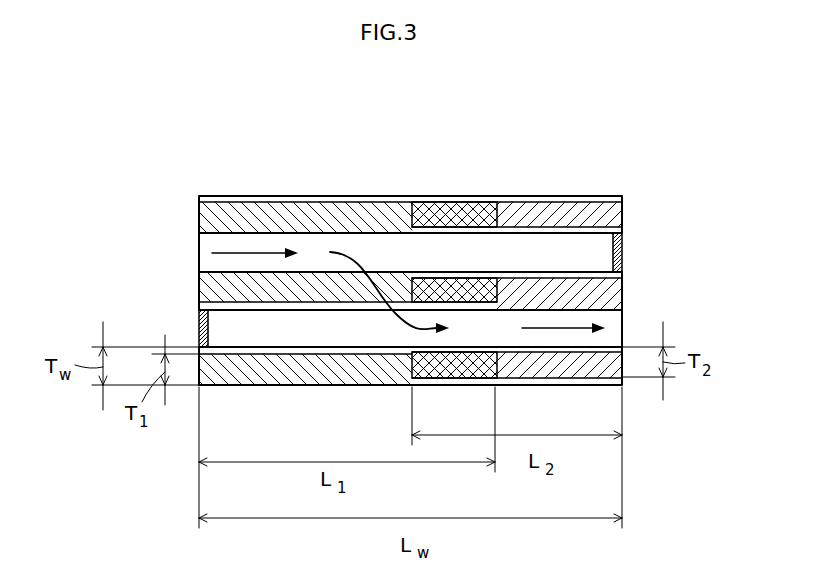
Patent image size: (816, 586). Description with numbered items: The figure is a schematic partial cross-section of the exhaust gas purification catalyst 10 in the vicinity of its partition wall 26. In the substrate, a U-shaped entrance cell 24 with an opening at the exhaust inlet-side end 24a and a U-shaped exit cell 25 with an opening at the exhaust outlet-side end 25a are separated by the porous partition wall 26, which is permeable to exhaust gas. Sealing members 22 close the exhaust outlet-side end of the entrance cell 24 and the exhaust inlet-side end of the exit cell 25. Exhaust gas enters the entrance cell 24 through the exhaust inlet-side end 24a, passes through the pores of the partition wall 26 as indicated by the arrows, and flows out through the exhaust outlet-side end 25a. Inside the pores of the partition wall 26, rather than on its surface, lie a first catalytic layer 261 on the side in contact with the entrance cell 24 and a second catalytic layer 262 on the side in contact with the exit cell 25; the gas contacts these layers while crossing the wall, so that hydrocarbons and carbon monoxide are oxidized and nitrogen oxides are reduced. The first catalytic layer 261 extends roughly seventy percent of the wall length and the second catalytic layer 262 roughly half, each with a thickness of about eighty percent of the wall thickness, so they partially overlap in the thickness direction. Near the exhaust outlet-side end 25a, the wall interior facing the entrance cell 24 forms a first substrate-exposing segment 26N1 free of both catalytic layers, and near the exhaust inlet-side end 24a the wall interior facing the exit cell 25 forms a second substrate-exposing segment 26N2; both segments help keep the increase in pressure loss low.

The exhaust gas purification catalyst 10 is at (682, 84).
The sealing member 22 is at (201, 325).
The entrance cell 24 is at (433, 257).
The exhaust inlet-side end 24a is at (191, 254).
The exit cell 25 is at (512, 340).
The exhaust outlet-side end 25a is at (631, 332).
The partition wall 26 is at (630, 296).
The first catalytic layer 261 is at (312, 358).
The second catalytic layer 262 is at (548, 356).
The first substrate-exposing segment 26N1 is at (590, 356).
The second substrate-exposing segment 26N2 is at (228, 300).